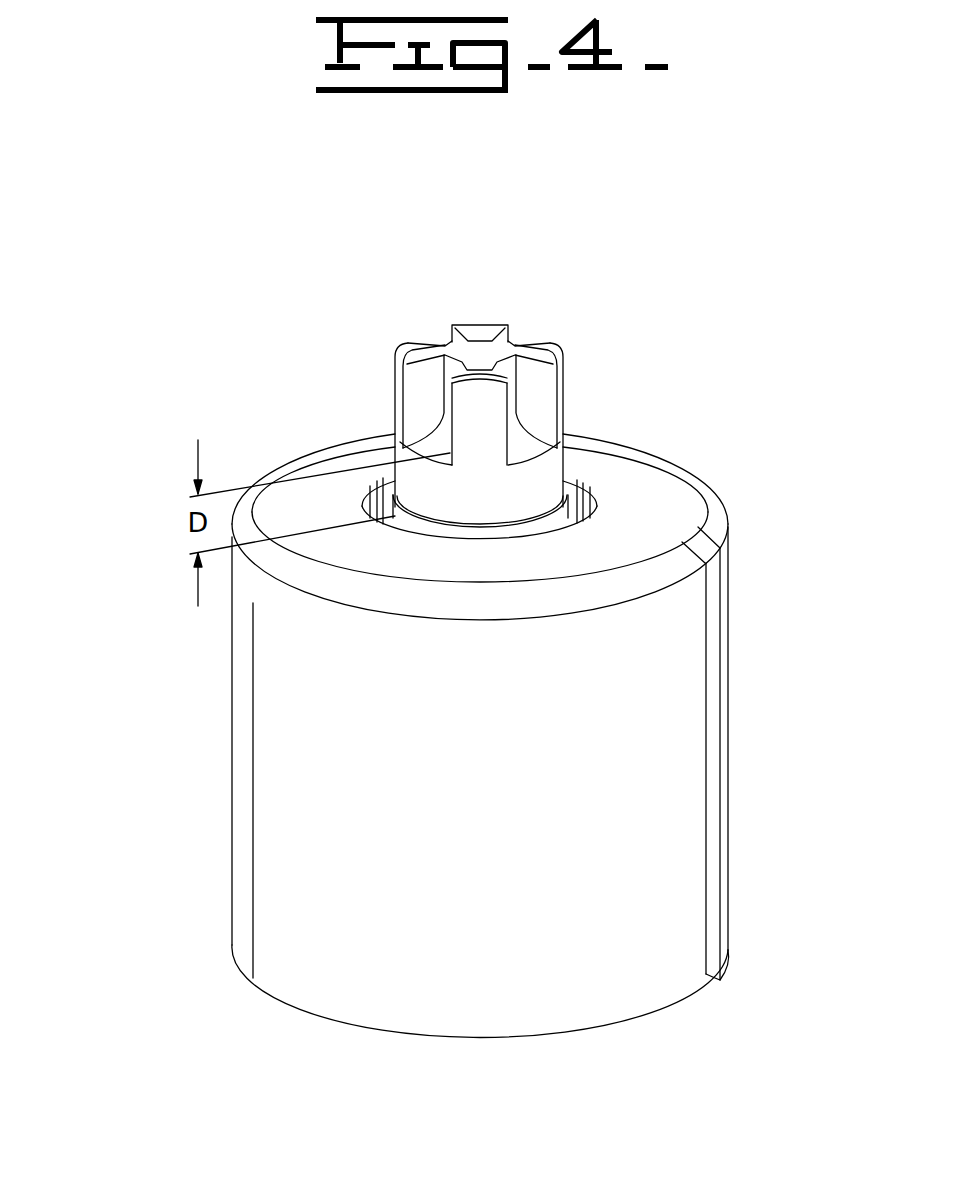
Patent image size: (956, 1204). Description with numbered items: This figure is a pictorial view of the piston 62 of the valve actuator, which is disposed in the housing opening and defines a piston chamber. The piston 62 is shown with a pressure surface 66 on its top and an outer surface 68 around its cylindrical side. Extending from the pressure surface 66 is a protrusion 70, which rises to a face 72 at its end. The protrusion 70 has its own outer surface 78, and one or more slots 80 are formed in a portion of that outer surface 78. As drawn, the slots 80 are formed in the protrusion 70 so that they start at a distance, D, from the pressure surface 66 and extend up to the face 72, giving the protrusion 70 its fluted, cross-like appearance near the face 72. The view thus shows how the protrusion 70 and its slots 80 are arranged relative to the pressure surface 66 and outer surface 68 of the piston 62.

The piston 62 is at (160, 790).
The pressure surface 66 is at (657, 472).
The outer surface 68 is at (730, 778).
The protrusion 70 is at (333, 342).
The face 72 is at (472, 347).
The outer surface 78 is at (553, 463).
The slots 80 is at (436, 343).